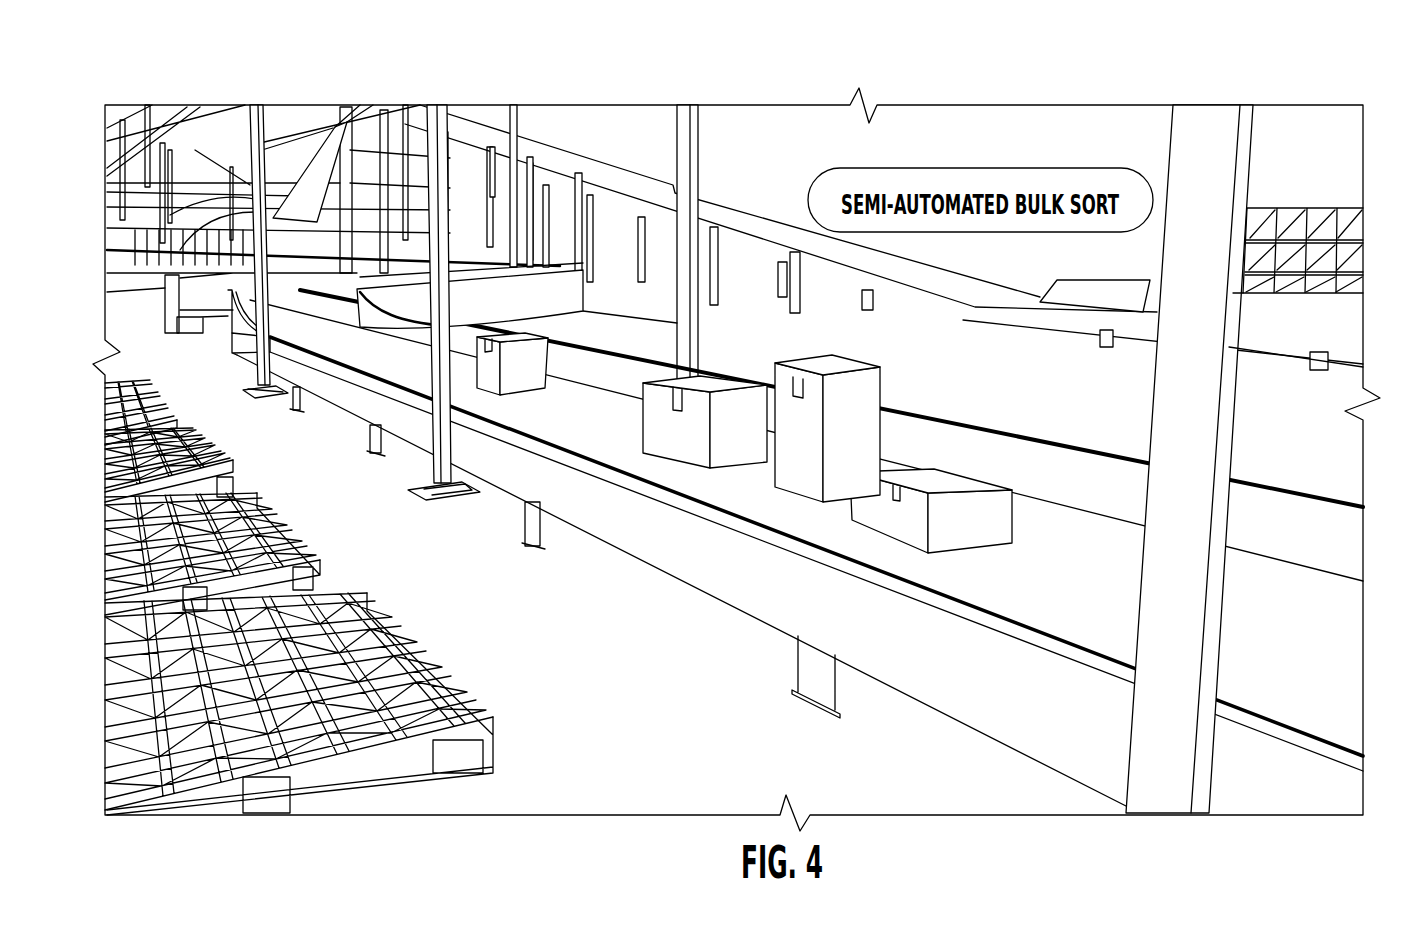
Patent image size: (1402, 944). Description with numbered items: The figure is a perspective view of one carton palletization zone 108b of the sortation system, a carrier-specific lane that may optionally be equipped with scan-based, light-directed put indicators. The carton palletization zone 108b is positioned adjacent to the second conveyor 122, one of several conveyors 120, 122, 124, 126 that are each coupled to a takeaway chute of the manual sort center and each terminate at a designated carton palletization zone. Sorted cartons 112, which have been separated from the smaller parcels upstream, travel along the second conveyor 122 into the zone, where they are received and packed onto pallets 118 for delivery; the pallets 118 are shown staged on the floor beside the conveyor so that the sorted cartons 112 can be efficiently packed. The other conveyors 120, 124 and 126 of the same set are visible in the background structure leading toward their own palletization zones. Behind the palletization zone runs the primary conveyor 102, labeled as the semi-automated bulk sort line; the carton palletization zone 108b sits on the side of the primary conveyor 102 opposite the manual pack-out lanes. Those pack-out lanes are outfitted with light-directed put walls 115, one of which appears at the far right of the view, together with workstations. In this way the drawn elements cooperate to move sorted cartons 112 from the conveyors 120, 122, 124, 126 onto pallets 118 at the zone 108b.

The primary conveyor 102 is at (760, 213).
The carton palletization zone 108b is at (404, 566).
The carton 112 is at (872, 382).
The light-directed put wall 115 is at (1340, 207).
The pallet 118 is at (435, 663).
The conveyor 120 is at (363, 150).
The second conveyor 122 is at (797, 601).
The conveyor 124 is at (173, 117).
The conveyor 126 is at (152, 300).